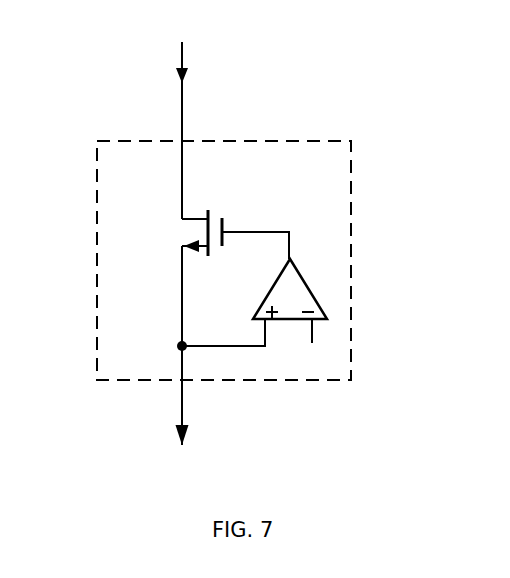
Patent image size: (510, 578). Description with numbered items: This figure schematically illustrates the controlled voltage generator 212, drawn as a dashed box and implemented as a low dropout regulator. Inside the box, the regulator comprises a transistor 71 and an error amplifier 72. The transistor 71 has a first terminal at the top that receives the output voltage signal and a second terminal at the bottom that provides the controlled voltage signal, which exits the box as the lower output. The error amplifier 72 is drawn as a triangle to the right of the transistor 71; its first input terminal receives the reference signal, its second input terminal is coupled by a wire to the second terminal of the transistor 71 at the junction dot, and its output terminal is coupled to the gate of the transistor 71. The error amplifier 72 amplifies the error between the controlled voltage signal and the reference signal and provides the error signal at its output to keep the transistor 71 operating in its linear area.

The controlled voltage generator 212 is at (305, 50).
The transistor 71 is at (228, 222).
The error amplifier 72 is at (266, 283).